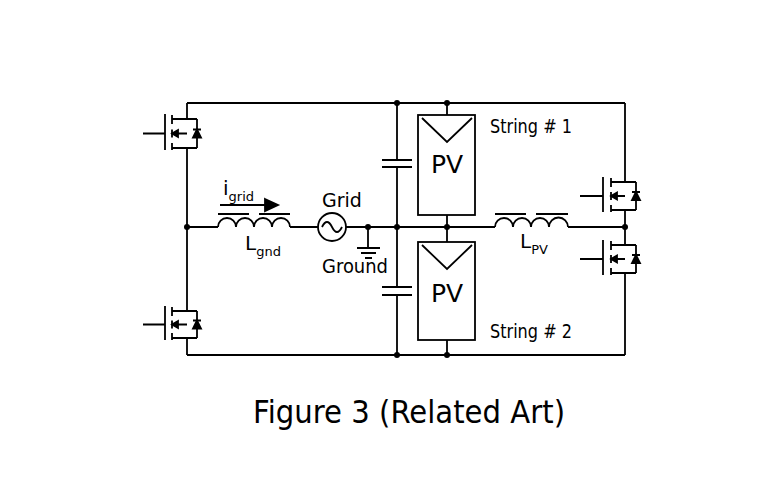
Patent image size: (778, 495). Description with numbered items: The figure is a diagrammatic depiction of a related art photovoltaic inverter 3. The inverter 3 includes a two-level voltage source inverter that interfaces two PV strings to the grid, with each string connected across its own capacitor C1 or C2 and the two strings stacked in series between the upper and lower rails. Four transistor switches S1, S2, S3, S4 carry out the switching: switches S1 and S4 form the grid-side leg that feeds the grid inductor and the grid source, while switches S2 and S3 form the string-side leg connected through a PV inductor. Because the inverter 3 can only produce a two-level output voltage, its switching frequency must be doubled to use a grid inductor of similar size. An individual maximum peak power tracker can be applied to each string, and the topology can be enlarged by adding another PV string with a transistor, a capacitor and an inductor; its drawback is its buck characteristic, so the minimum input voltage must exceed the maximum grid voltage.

The photovoltaic inverter 3 is at (88, 76).
The switch S1 is at (189, 134).
The switch S2 is at (627, 196).
The switch S3 is at (627, 258).
The switch S4 is at (189, 326).
The capacitor C1 is at (387, 165).
The capacitor C2 is at (387, 291).